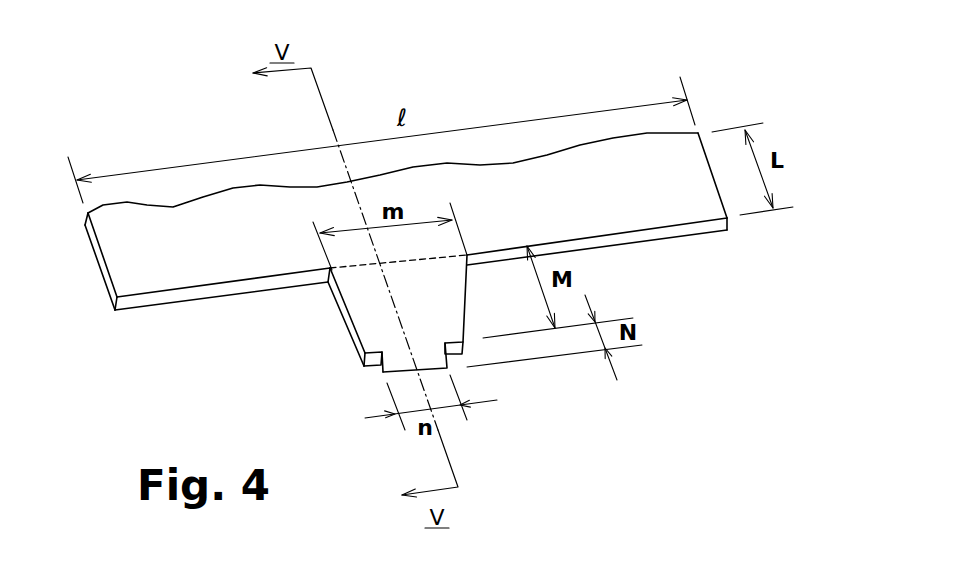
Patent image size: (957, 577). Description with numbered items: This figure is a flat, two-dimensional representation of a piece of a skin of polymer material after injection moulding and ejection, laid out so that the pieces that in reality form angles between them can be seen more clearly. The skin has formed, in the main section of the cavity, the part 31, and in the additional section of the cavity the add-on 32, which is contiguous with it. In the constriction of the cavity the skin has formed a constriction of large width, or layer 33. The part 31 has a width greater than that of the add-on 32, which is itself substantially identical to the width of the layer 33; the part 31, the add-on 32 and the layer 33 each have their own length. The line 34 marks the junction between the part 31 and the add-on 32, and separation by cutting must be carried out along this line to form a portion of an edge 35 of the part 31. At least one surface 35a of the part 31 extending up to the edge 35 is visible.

The part 31 is at (497, 185).
The add-on 32 is at (466, 300).
The layer 33 is at (384, 372).
The line 34 is at (369, 268).
The edge 35 is at (668, 232).
The surface 35a is at (600, 164).